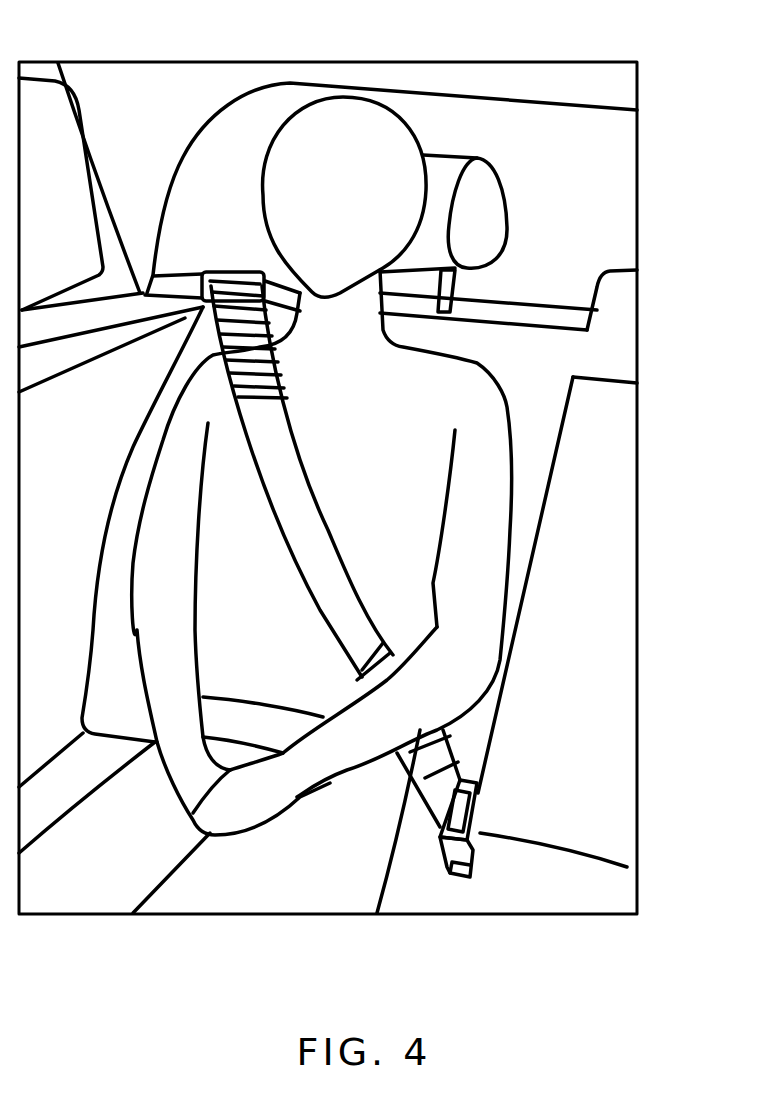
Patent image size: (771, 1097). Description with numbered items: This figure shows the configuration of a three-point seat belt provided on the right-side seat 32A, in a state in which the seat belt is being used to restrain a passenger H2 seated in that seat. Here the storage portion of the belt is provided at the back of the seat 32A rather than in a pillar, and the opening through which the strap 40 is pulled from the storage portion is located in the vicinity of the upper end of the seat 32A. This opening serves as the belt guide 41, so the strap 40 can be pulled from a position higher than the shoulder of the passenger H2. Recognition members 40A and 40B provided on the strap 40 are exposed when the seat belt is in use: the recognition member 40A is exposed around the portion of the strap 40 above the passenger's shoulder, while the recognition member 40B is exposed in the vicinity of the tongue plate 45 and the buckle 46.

The strap 40 is at (323, 525).
The recognition member 40A is at (268, 368).
The recognition member 40B is at (420, 745).
The belt guide 41 is at (237, 275).
The tongue plate 45 is at (478, 823).
The buckle 46 is at (458, 878).
The right-side seat 32A is at (527, 470).
The passenger H2 is at (453, 383).